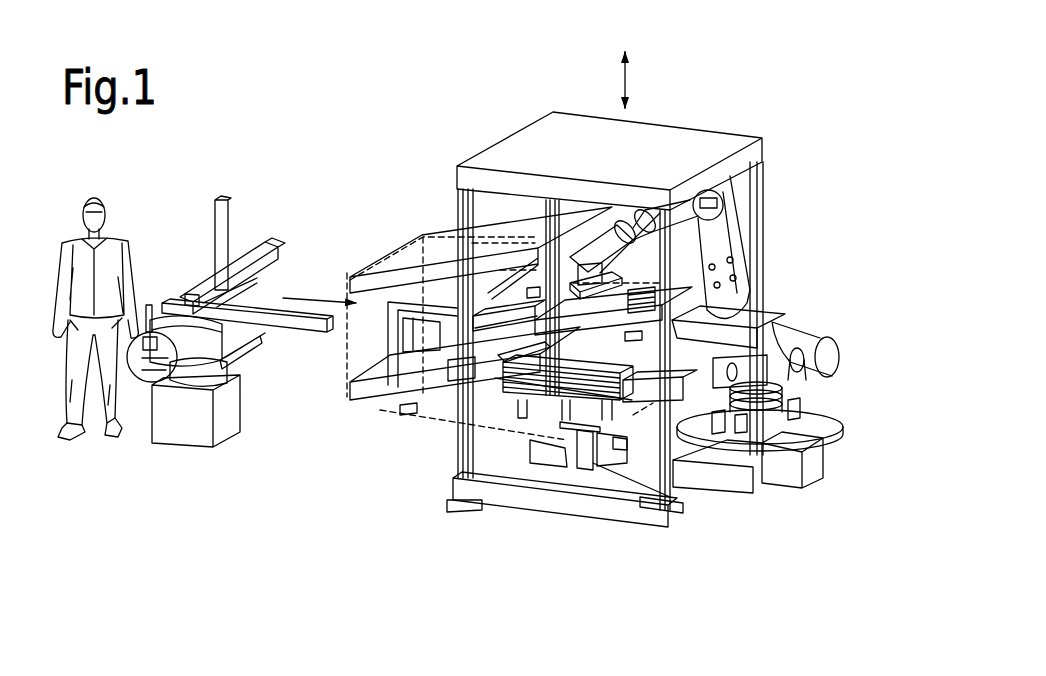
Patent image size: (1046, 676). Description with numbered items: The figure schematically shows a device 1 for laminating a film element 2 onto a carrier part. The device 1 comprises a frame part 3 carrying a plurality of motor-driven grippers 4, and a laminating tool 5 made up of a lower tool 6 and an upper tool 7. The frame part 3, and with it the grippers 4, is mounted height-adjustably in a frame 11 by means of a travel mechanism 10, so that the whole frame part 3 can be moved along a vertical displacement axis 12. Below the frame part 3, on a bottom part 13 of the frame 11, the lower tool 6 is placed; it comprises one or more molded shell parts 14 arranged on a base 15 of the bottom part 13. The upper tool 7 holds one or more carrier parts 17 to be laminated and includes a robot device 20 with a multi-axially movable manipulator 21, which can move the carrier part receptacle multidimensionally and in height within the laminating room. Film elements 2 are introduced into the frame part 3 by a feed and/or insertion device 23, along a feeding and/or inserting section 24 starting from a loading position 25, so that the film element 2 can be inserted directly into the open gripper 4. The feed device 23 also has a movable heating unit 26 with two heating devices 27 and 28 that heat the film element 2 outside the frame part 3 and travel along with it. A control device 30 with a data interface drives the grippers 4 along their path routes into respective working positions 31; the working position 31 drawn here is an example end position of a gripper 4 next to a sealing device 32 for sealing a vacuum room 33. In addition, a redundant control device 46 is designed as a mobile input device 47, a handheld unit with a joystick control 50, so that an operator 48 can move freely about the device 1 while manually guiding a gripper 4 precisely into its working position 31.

The device 1 is at (717, 92).
The film element 2 is at (385, 400).
The frame part 3 is at (543, 380).
The motor-driven grippers 4 is at (560, 465).
The laminating tool 5 is at (710, 489).
The lower tool 6 is at (587, 484).
The upper tool 7 is at (780, 262).
The travel mechanism 10 is at (446, 375).
The frame 11 is at (458, 202).
The vertical displacement axis 12 is at (620, 82).
The bottom part 13 is at (463, 493).
The molded shell parts 14 is at (580, 435).
The base 15 is at (602, 470).
The carrier parts 17 is at (556, 303).
The robot device 20 is at (808, 398).
The multi-axially movable manipulator 21 is at (730, 238).
The feed and/or insertion device 23 is at (328, 212).
The feeding and/or inserting section 24 is at (308, 297).
The loading position 25 is at (200, 268).
The movable heating unit 26 is at (406, 231).
The heating device 27 is at (349, 276).
The heating device 28 is at (372, 403).
The control device 30 is at (808, 462).
The working position 31 is at (643, 510).
The sealing device 32 is at (622, 452).
The vacuum room 33 is at (650, 425).
The redundant control device 46 is at (140, 382).
The mobile input device 47 is at (168, 402).
The operator 48 is at (75, 244).
The joystick control 50 is at (148, 305).